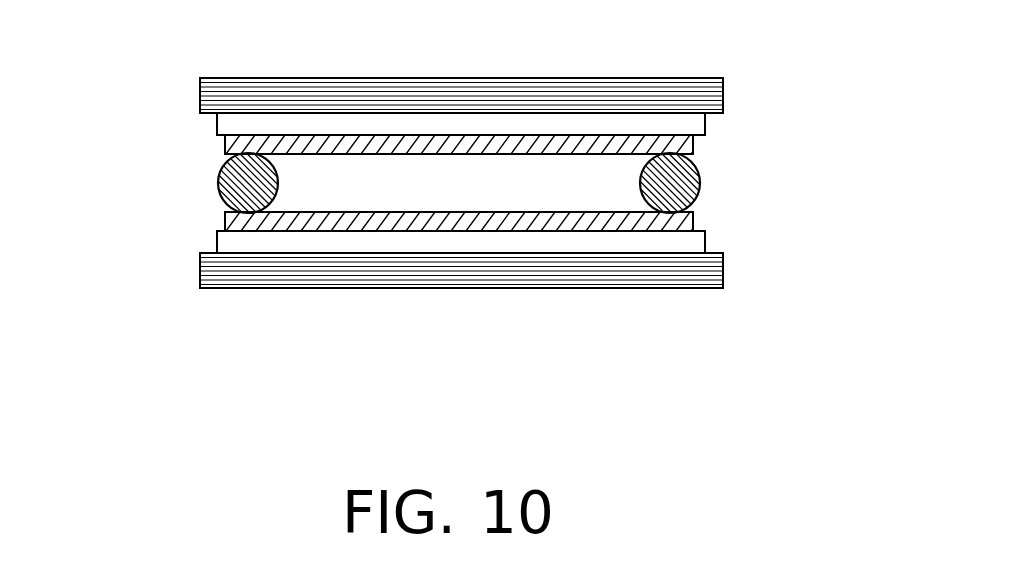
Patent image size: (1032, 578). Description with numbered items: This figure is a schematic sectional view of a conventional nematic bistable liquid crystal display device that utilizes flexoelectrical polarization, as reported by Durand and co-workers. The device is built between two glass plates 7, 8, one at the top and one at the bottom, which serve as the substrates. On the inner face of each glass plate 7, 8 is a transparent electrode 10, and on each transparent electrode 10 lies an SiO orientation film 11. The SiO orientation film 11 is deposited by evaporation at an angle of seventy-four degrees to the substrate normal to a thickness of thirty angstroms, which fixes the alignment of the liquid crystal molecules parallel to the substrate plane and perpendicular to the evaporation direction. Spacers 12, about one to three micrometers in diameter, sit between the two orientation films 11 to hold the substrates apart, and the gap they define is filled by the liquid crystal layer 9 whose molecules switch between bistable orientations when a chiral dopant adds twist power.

The glass plate 7 is at (723, 95).
The glass plate 8 is at (723, 268).
The liquid crystal layer 9 is at (443, 200).
The transparent electrode 10 is at (705, 123).
The SiO orientation film 11 is at (693, 143).
The spacer 12 is at (218, 170).